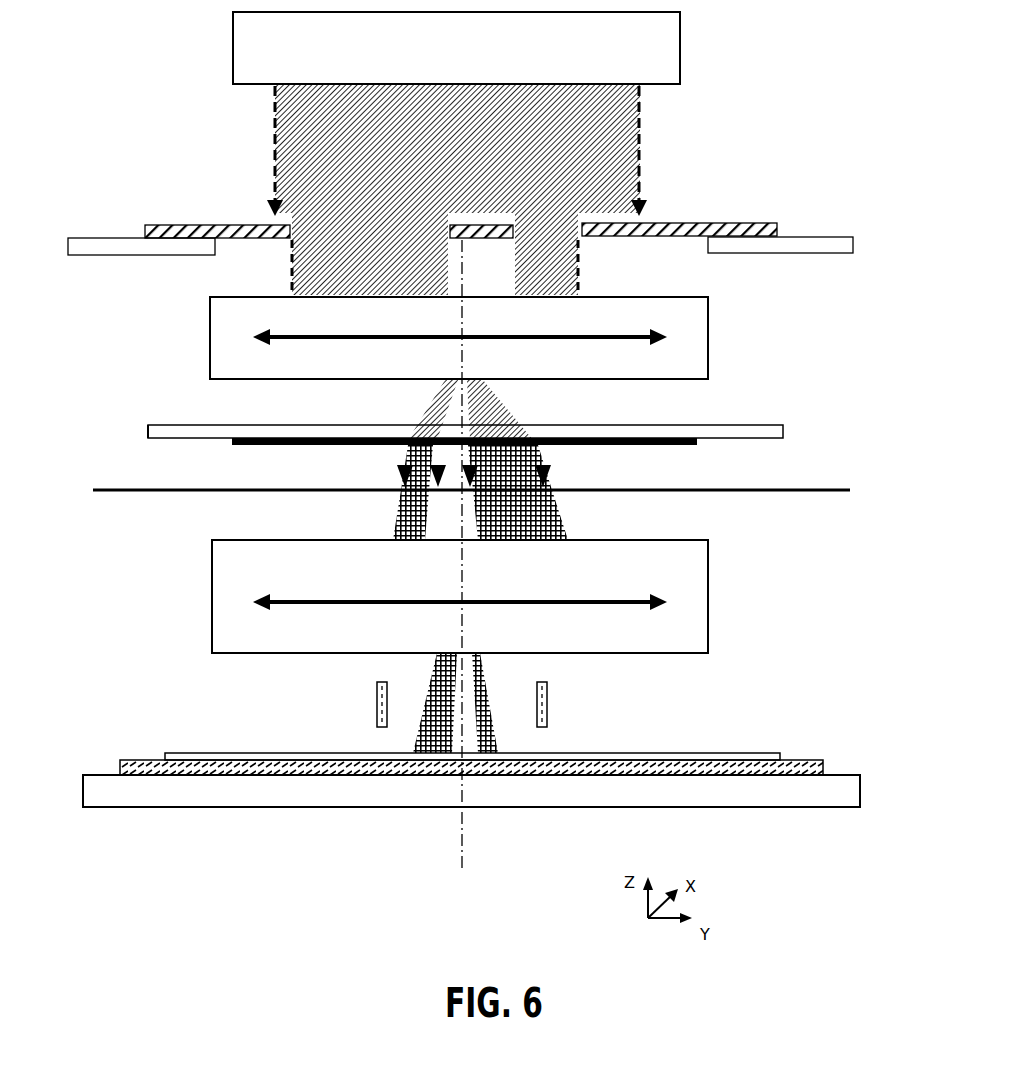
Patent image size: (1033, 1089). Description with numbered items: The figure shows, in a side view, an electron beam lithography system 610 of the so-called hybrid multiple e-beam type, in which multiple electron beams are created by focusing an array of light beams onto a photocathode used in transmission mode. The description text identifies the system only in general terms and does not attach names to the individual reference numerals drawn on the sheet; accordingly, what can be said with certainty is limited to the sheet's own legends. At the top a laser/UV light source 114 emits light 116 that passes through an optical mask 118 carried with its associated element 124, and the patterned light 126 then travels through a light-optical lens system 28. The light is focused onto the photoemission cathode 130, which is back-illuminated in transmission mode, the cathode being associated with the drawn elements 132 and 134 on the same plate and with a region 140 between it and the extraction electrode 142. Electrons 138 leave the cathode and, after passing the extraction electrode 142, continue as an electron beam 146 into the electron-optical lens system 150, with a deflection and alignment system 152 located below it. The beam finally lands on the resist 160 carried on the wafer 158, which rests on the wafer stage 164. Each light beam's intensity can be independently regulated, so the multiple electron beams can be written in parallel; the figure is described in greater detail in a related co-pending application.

The laser/UV light source 114 is at (680, 58).
The light beam 116 is at (640, 162).
The optical mask 118 is at (233, 223).
The mask substrate 124 is at (842, 236).
The patterned light passing mask 126 is at (580, 262).
The light-optical lens system 28 is at (708, 362).
The photoemission cathode 130 is at (540, 430).
The cathode substrate 132 is at (146, 428).
The photoemissive layer 134 is at (228, 444).
The electron beam 138 is at (540, 462).
The acceleration gap 140 is at (372, 478).
The extraction electrode 142 is at (203, 497).
The extracted electron beam 146 is at (558, 510).
The electron-optical lens system 150 is at (298, 655).
The deflection and alignment system 152 is at (548, 702).
The wafer 158 is at (267, 765).
The resist 160 is at (680, 757).
The wafer stage 164 is at (417, 792).
The lithography system 610 is at (840, 17).